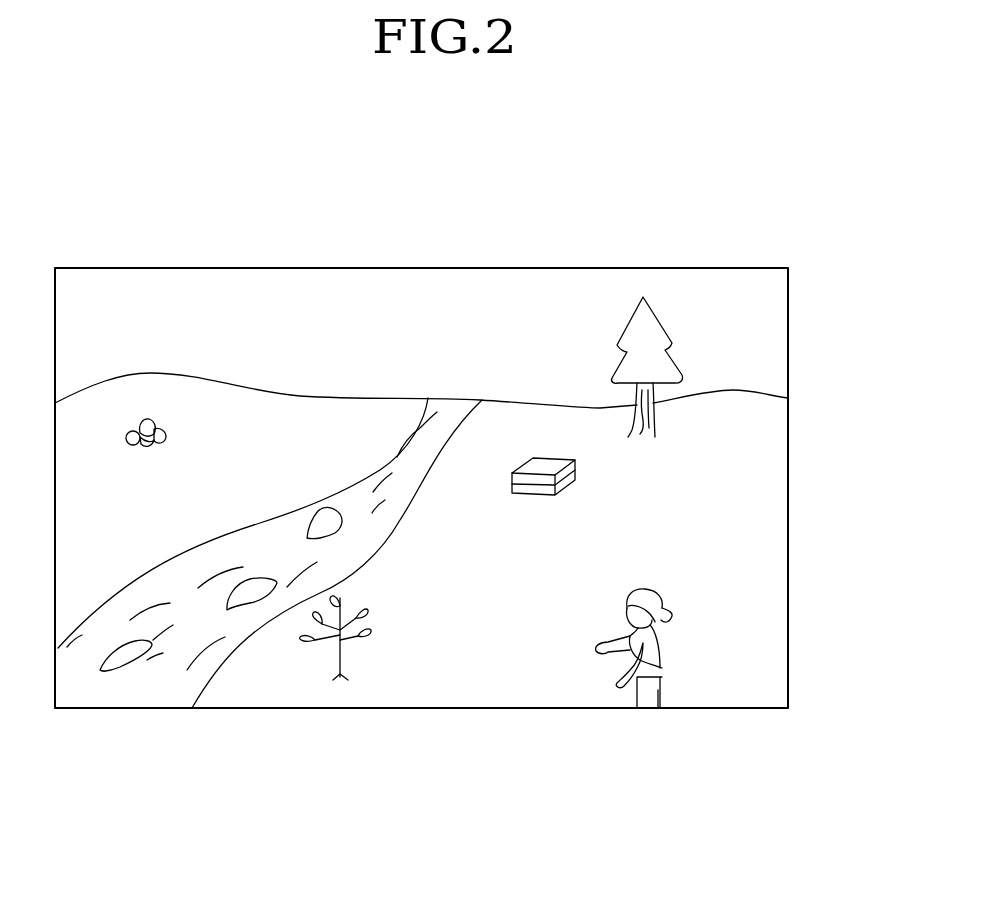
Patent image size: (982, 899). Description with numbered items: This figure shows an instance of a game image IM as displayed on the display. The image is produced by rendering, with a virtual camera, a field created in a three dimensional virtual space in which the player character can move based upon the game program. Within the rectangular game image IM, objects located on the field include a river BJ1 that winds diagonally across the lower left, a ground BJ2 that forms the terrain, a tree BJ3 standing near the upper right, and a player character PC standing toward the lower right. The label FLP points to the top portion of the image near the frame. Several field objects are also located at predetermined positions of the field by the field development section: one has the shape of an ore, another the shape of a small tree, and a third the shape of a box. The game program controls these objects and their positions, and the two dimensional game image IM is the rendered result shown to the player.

The game image IM is at (660, 247).
The focal plane (horizon) FLP is at (522, 303).
The river BJ1 is at (452, 407).
The ground BJ2 is at (740, 512).
The tree BJ3 is at (665, 326).
The player character PC is at (657, 673).